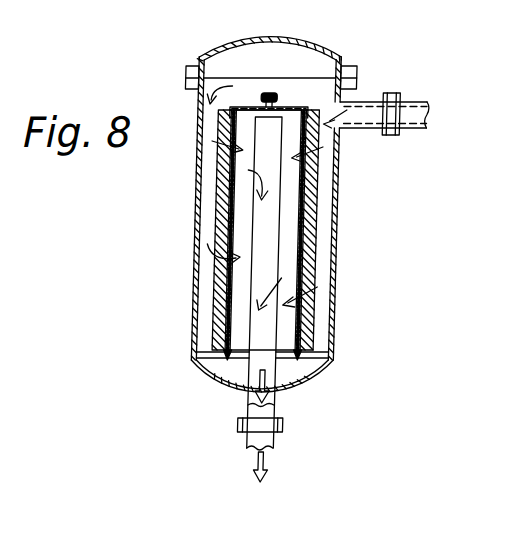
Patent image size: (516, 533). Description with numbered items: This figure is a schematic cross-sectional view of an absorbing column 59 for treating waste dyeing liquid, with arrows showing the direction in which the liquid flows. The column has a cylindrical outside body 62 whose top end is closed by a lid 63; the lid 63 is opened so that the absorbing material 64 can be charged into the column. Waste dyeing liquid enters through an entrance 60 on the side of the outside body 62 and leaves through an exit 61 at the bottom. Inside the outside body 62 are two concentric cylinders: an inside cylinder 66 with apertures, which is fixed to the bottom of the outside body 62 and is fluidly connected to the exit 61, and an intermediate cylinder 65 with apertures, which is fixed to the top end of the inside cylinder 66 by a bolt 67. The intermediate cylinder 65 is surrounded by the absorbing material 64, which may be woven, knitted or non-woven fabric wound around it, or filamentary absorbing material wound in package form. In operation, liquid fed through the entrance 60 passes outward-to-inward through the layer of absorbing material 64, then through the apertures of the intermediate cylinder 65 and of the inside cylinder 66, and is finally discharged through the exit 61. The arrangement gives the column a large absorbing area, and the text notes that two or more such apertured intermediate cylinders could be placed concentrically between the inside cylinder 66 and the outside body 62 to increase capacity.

The absorbing column 59 is at (316, 16).
The entrance 60 is at (469, 114).
The exit 61 is at (276, 467).
The cylindrical outside body 62 is at (194, 178).
The lid 63 is at (224, 38).
The absorbing material 64 is at (309, 198).
The intermediate cylinder 65 is at (231, 203).
The inside cylinder 66 is at (264, 283).
The bolt 67 is at (265, 92).